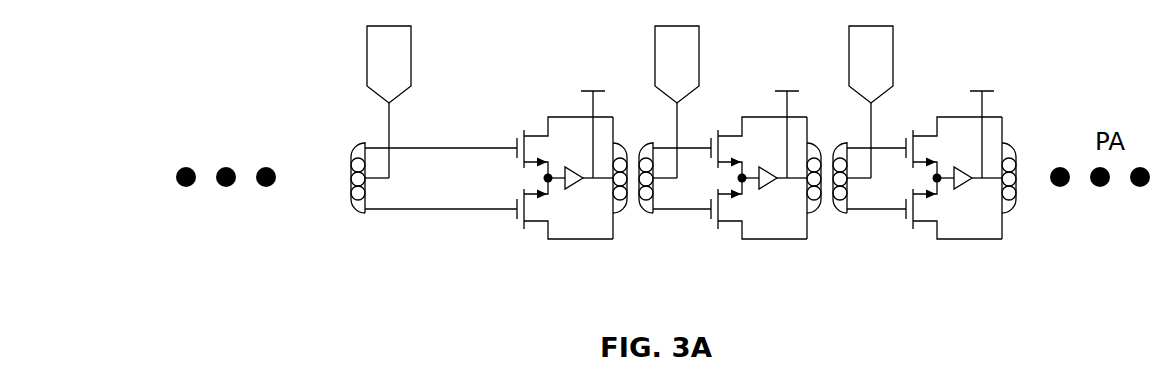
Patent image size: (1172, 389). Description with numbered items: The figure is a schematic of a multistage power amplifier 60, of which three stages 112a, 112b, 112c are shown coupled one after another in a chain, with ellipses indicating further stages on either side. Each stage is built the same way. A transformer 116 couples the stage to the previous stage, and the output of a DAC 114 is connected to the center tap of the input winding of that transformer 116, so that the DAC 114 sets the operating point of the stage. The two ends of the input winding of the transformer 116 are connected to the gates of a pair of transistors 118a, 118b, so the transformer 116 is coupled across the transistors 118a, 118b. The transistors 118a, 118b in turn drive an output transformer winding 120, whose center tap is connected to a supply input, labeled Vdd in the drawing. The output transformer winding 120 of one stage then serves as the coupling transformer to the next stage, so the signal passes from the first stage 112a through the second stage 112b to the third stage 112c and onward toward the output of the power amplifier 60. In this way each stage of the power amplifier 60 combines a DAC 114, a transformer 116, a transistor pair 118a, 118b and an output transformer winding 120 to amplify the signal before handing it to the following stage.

The power amplifier 60 is at (170, 47).
The stage 112a is at (487, 175).
The stage 112b is at (827, 277).
The stage 112c is at (1027, 277).
The DAC 114 is at (367, 53).
The transformer 116 is at (351, 209).
The transistor 118a is at (516, 147).
The transistor 118b is at (516, 211).
The output transformer winding 120 is at (655, 186).